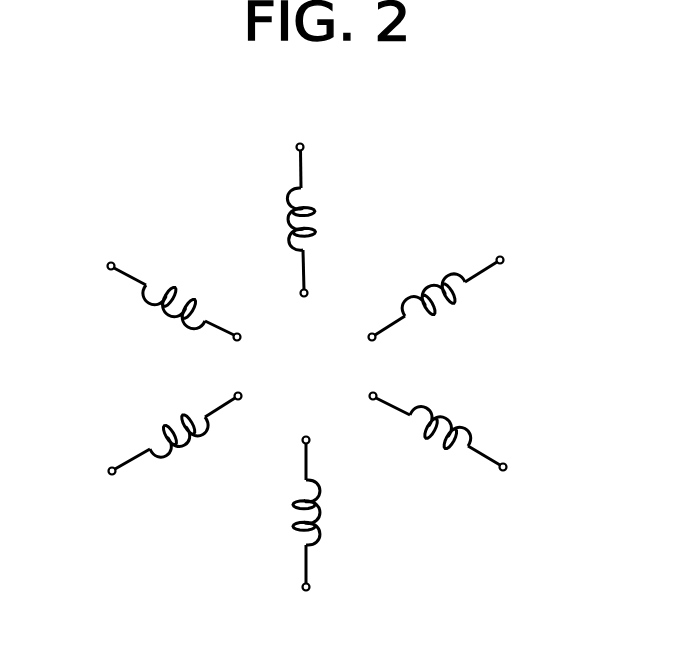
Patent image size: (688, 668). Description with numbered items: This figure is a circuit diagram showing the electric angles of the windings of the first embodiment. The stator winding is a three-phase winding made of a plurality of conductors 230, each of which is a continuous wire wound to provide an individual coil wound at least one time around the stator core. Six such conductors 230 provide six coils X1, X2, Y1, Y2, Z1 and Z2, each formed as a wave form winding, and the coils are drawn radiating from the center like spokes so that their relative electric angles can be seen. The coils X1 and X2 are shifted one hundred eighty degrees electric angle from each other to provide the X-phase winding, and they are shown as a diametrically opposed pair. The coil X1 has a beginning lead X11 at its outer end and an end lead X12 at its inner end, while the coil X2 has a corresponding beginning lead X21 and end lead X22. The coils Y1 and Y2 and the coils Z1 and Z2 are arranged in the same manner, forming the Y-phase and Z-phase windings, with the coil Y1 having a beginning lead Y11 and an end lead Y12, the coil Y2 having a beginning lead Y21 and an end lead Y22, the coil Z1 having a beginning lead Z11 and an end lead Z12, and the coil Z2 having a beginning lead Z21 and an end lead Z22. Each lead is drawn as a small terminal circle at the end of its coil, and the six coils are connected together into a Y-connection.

The conductors 230 is at (444, 268).
The coil X1 is at (430, 283).
The coil X2 is at (183, 448).
The coil Y1 is at (445, 416).
The coil Y2 is at (167, 315).
The coil Z1 is at (283, 215).
The coil Z2 is at (325, 508).
The beginning lead X11 is at (524, 251).
The end lead X12 is at (350, 344).
The beginning lead X21 is at (90, 491).
The end lead X22 is at (260, 384).
The beginning lead Y11 is at (524, 484).
The end lead Y12 is at (350, 384).
The beginning lead Y21 is at (85, 262).
The end lead Y22 is at (260, 344).
The beginning lead Z11 is at (302, 132).
The end lead Z12 is at (309, 310).
The beginning lead Z21 is at (313, 605).
The end lead Z22 is at (310, 424).